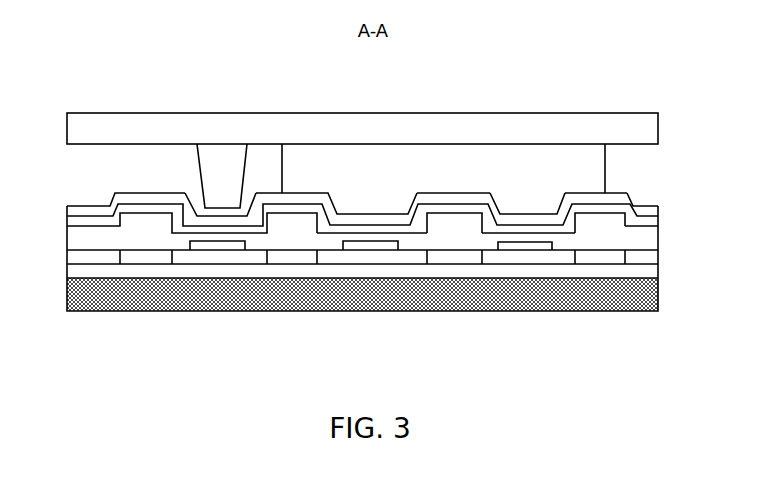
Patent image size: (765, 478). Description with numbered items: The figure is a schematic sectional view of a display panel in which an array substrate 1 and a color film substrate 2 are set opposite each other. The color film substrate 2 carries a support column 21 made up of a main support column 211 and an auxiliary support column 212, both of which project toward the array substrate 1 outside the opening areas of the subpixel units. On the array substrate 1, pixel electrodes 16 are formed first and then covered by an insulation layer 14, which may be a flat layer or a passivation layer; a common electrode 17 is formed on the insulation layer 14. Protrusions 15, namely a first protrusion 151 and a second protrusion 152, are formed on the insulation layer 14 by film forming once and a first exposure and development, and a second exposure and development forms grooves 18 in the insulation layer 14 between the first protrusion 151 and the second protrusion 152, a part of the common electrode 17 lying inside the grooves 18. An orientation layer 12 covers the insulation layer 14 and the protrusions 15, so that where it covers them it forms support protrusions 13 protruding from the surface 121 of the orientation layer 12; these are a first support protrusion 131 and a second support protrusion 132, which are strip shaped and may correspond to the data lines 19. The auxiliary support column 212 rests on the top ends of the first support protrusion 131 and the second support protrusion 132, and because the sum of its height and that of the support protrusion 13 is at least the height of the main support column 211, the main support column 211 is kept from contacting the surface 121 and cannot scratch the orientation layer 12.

The array substrate 1 is at (73, 126).
The color film substrate 2 is at (62, 210).
The support column 21 is at (401, 121).
The main support column 211 is at (223, 158).
The auxiliary support column 212 is at (443, 134).
The orientation layer 12 is at (660, 212).
The surface of the orientation layer 121 is at (203, 216).
The support protrusion 13 is at (522, 110).
The first support protrusion 131 is at (428, 194).
The second support protrusion 132 is at (596, 132).
The insulation layer 14 is at (640, 240).
The protrusion 15 is at (526, 296).
The first protrusion 151 is at (457, 222).
The second protrusion 152 is at (590, 225).
The pixel electrode 16 is at (206, 251).
The common electrode 17 is at (643, 221).
The groove 18 is at (407, 234).
The data line 19 is at (137, 258).